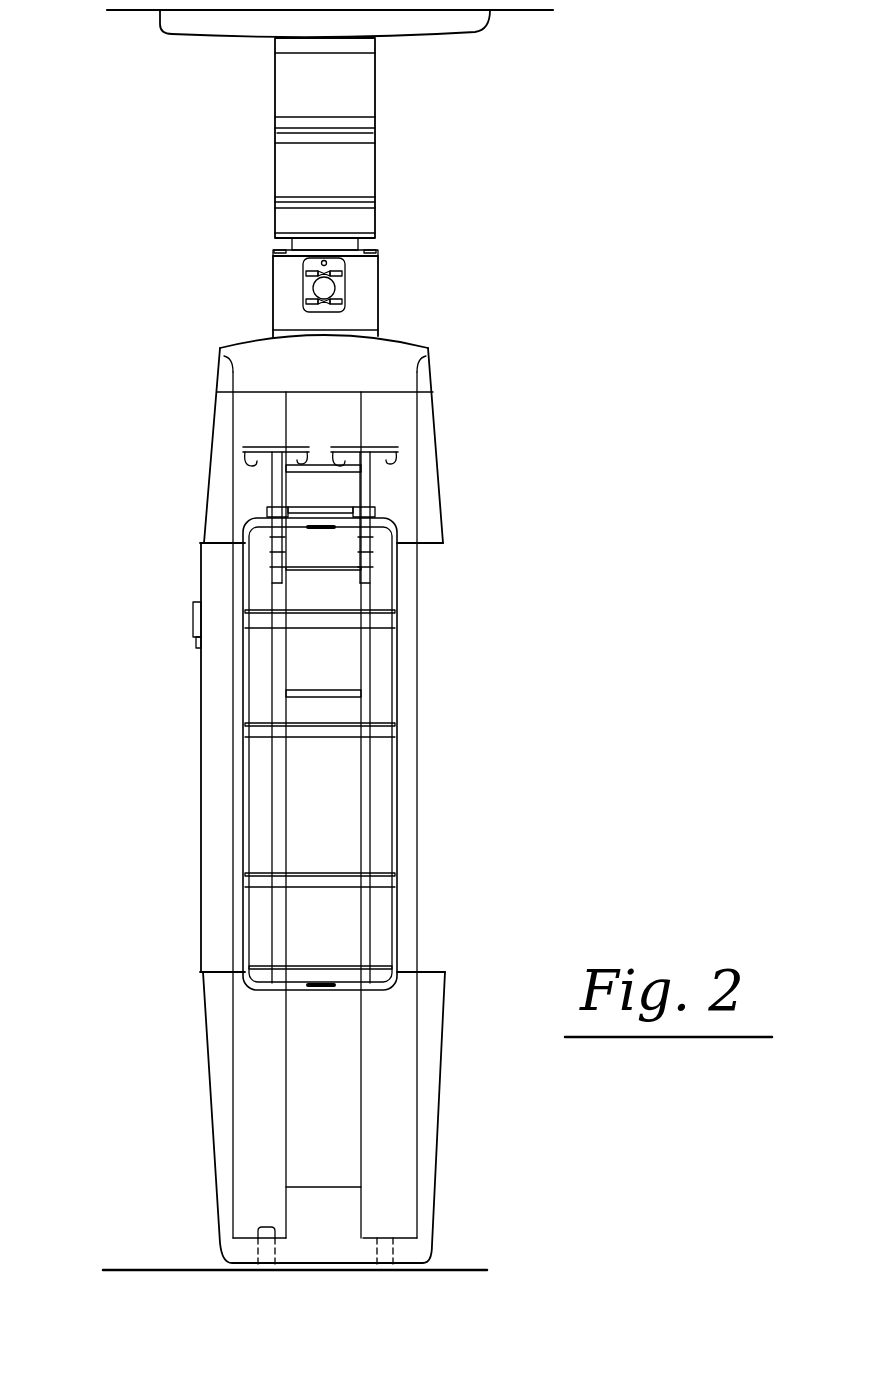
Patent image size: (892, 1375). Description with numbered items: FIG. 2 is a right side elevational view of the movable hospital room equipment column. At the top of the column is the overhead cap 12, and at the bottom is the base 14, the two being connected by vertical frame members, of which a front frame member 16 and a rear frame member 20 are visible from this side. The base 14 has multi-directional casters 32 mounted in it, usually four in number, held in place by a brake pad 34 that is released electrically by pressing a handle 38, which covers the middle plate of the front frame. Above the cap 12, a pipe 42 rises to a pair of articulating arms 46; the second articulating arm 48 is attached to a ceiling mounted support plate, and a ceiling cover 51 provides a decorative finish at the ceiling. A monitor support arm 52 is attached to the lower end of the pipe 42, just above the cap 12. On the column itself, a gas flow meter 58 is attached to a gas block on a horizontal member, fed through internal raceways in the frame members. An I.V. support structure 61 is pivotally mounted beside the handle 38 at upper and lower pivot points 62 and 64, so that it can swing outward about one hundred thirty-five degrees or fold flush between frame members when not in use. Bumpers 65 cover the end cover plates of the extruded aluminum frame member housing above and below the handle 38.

The overhead cap 12 is at (248, 340).
The base 14 is at (348, 1209).
The front frame member 16 is at (252, 1167).
The rear frame member 20 is at (403, 1135).
The multi-directional casters 32 is at (263, 1270).
The brake pad 34 is at (338, 1272).
The handle 38 is at (212, 836).
The pipe 42 is at (286, 251).
The articulating arms 46 is at (414, 100).
The second articulating arm 48 is at (358, 98).
The ceiling cover 51 is at (468, 27).
The monitor support arm 52 is at (348, 287).
The gas flow meter 58 is at (199, 580).
The I.V. support structure 61 is at (396, 708).
The pivot point 62 is at (217, 540).
The pivot point 64 is at (236, 970).
The bumpers 65 is at (208, 480).